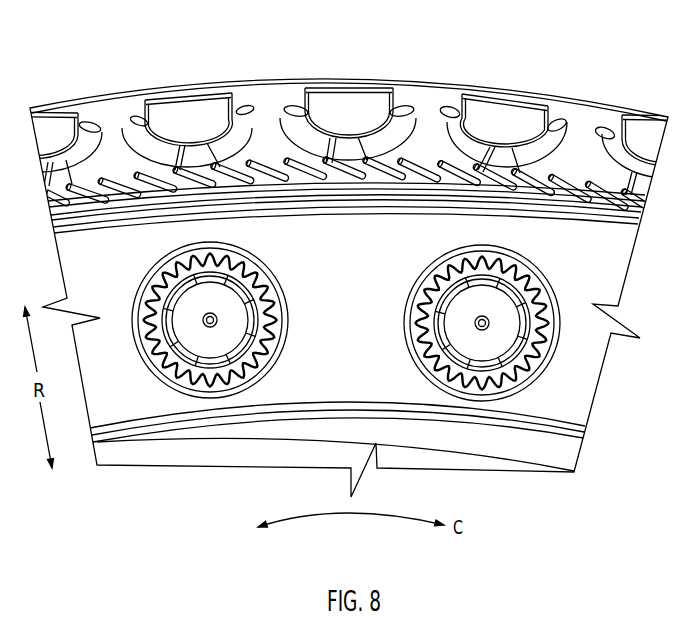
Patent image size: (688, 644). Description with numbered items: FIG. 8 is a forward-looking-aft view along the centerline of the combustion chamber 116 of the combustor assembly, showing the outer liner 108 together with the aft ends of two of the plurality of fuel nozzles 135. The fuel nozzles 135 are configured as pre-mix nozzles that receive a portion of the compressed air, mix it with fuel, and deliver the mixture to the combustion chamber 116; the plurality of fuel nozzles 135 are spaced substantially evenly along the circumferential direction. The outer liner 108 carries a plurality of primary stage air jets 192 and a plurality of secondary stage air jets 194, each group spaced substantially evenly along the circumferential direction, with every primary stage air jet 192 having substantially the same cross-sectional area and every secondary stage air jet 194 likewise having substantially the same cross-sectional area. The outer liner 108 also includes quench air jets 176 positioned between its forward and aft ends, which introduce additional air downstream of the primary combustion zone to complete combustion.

The outer liner 108 is at (578, 147).
The combustion chamber 116 is at (367, 292).
The fuel nozzle 135 is at (193, 343).
The quench air jets 176 is at (241, 99).
The primary stage air jets 192 is at (337, 80).
The secondary stage air jets 194 is at (424, 162).